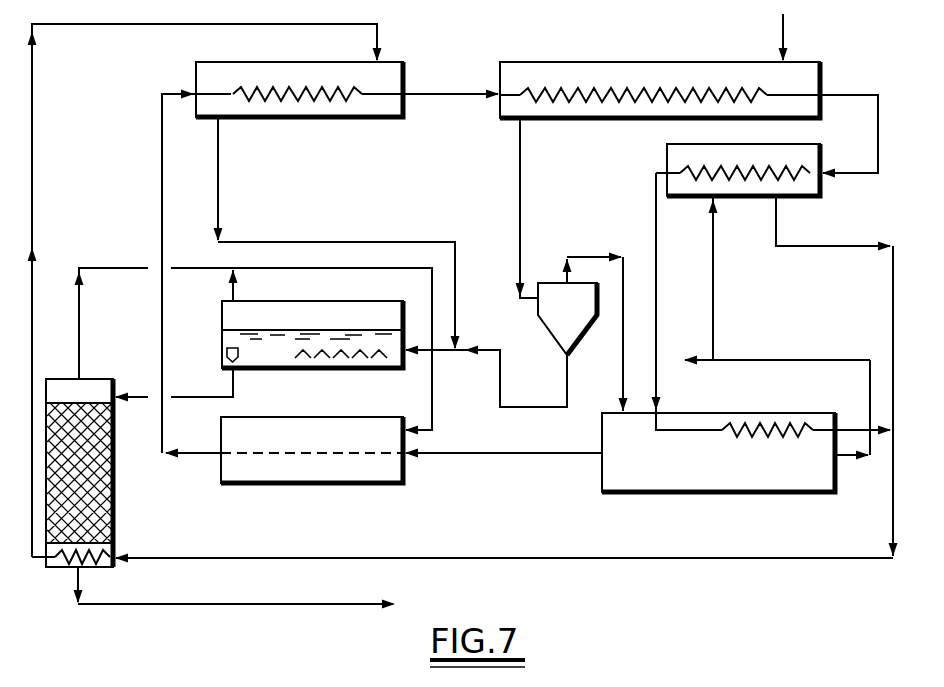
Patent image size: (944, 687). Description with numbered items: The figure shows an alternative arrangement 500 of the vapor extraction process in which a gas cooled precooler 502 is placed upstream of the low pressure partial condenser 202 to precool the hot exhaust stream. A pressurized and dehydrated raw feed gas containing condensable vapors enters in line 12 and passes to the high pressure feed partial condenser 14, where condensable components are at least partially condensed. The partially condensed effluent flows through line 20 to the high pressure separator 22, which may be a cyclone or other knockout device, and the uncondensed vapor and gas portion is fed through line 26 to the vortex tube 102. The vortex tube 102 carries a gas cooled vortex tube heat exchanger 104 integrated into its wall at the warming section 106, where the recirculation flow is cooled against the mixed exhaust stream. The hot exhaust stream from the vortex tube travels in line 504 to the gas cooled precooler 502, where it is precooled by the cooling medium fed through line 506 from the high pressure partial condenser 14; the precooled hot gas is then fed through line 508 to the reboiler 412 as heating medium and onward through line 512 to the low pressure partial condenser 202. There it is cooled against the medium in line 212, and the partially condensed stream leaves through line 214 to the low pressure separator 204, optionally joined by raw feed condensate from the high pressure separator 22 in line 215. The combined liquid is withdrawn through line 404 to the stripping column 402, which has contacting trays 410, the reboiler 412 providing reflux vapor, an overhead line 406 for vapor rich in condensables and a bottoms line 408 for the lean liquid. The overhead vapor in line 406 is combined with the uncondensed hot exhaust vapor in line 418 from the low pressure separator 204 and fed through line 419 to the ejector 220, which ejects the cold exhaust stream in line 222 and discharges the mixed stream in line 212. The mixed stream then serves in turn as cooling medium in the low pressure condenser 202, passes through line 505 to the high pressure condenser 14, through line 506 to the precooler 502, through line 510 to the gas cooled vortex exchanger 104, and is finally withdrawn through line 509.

The feed gas line 12 is at (783, 36).
The high pressure feed partial condenser 14 is at (578, 62).
The partially condensed effluent line 20 is at (522, 258).
The high pressure separator 22 is at (548, 283).
The uncondensed feed line 26 is at (622, 346).
The vortex tube 102 is at (660, 493).
The gas cooled vortex tube heat exchanger 104 is at (740, 428).
The warming section 106 is at (756, 458).
The low pressure partial condenser 202 is at (223, 62).
The low pressure separator 204 is at (316, 301).
The cooling medium line 212 is at (162, 166).
The partially condensed stream line 214 is at (248, 241).
The raw feed condensate line 215 is at (498, 390).
The ejector 220 is at (318, 417).
The cold exhaust stream line 222 is at (540, 455).
The stripping column 402 is at (113, 503).
The combined liquid withdrawal line 404 is at (196, 398).
The overhead line 406 is at (79, 356).
The bottoms line 408 is at (194, 603).
The vapor-liquid contacting elements or trays 410 is at (92, 480).
The reboiler 412 is at (86, 551).
The uncondensed hot exhaust vapor line 418 is at (233, 290).
The combined vapor line to ejector 419 is at (313, 268).
The alternative process arrangement 500 is at (833, 535).
The gas cooled precooler 502 is at (683, 144).
The hot exhaust stream line 504 is at (723, 357).
The mixed stream line to high pressure condenser 505 is at (455, 96).
The precooler cooling medium line 506 is at (878, 158).
The reboiler heating medium line 508 is at (656, 192).
The mixed stream withdrawal line 509 is at (858, 428).
The mixed stream line to vortex exchanger 510 is at (496, 557).
The hot exhaust line to low pressure condenser 512 is at (32, 80).